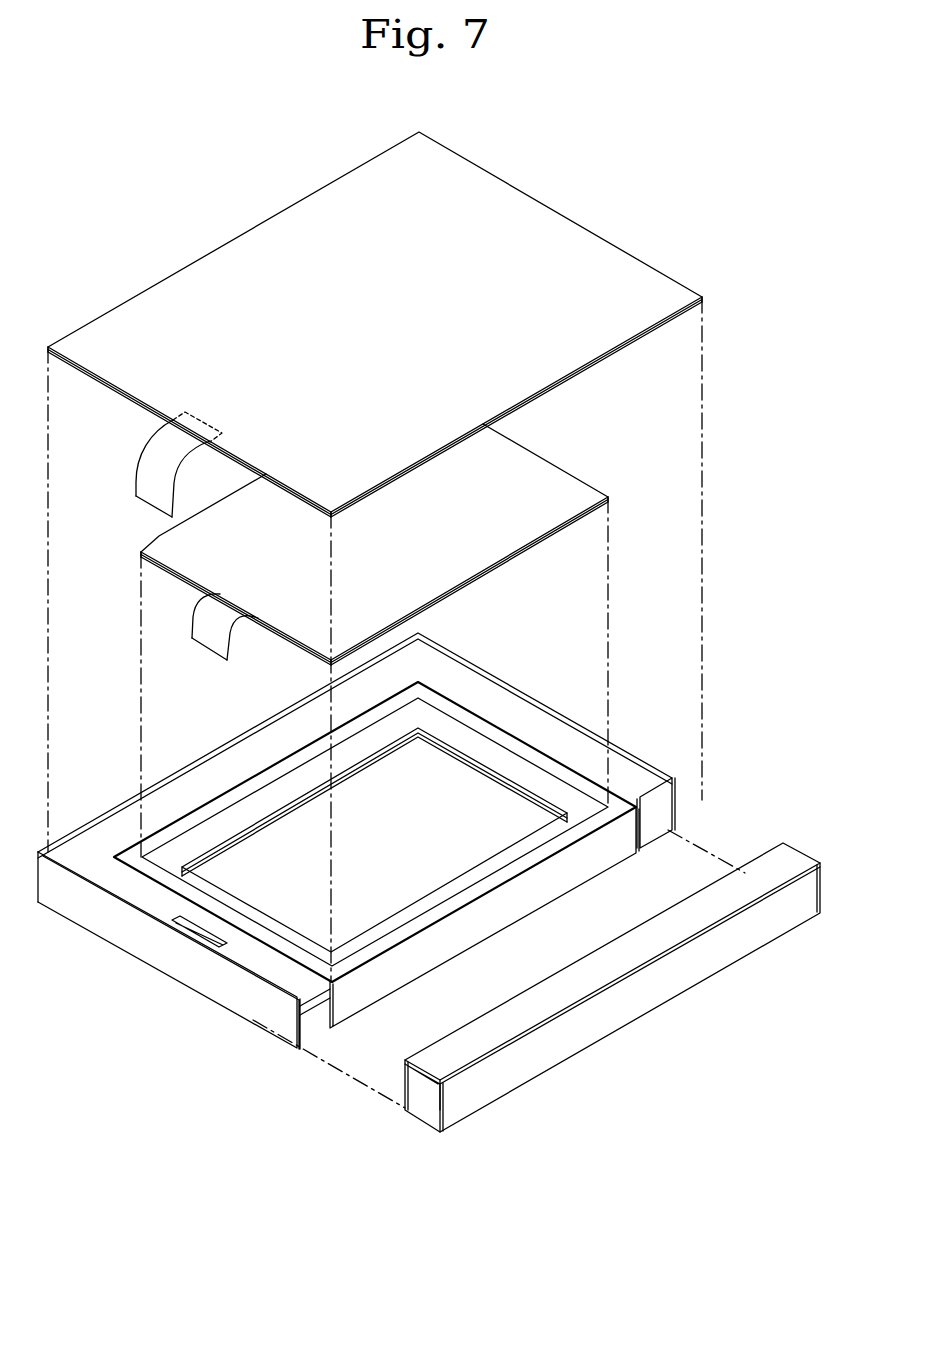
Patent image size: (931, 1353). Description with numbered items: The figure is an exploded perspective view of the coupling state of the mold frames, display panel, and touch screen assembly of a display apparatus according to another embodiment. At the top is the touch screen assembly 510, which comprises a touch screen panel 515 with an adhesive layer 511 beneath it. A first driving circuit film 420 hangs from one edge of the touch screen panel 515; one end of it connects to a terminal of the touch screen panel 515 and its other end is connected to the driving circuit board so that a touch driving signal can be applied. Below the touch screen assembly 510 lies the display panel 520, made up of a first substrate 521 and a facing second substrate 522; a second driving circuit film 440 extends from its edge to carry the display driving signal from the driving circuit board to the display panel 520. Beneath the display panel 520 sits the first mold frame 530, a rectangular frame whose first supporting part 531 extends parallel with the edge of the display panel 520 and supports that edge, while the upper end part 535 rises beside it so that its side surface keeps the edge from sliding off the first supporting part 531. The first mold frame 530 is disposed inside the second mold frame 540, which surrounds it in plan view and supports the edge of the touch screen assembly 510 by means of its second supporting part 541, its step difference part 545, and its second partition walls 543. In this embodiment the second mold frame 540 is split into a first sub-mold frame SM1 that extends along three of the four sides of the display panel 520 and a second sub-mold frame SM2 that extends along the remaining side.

The touch screen assembly 510 is at (434, 324).
The touch screen panel 515 is at (677, 292).
The adhesive layer 511 is at (690, 305).
The display panel 520 is at (479, 544).
The second substrate 522 is at (584, 495).
The first substrate 521 is at (590, 512).
The first driving circuit film 420 is at (150, 459).
The second driving circuit film 440 is at (212, 638).
The first mold frame 530 is at (376, 817).
The upper end part 535 is at (480, 724).
The first supporting part 531 is at (527, 777).
The second mold frame 540 is at (418, 824).
The second supporting part 541 is at (624, 772).
The step difference part 545 is at (655, 770).
The second partition walls 543 is at (693, 813).
The first sub-mold frame SM1 is at (240, 997).
The second sub-mold frame SM2 is at (579, 997).